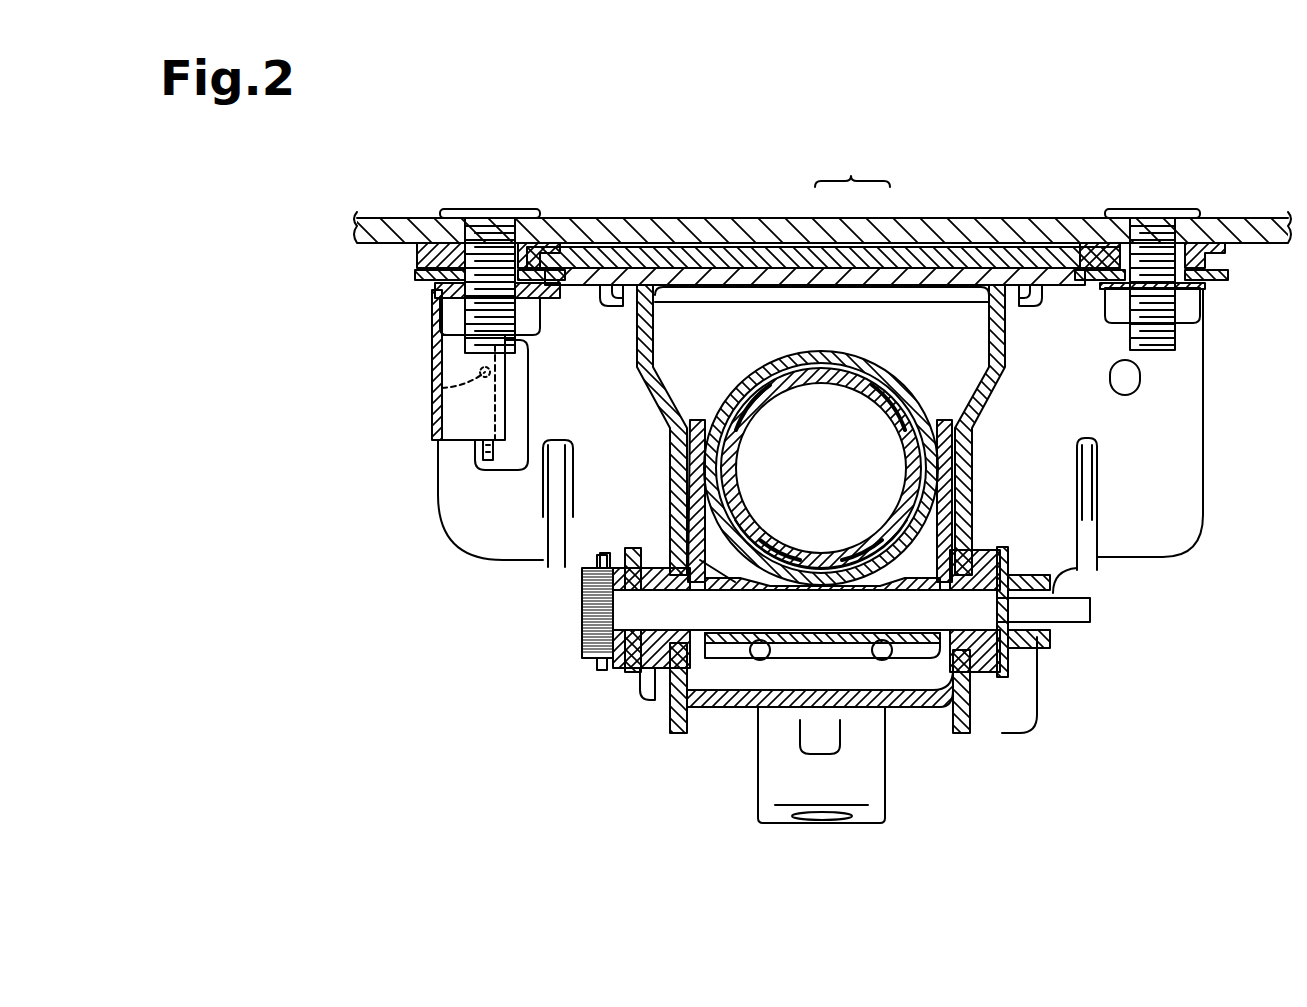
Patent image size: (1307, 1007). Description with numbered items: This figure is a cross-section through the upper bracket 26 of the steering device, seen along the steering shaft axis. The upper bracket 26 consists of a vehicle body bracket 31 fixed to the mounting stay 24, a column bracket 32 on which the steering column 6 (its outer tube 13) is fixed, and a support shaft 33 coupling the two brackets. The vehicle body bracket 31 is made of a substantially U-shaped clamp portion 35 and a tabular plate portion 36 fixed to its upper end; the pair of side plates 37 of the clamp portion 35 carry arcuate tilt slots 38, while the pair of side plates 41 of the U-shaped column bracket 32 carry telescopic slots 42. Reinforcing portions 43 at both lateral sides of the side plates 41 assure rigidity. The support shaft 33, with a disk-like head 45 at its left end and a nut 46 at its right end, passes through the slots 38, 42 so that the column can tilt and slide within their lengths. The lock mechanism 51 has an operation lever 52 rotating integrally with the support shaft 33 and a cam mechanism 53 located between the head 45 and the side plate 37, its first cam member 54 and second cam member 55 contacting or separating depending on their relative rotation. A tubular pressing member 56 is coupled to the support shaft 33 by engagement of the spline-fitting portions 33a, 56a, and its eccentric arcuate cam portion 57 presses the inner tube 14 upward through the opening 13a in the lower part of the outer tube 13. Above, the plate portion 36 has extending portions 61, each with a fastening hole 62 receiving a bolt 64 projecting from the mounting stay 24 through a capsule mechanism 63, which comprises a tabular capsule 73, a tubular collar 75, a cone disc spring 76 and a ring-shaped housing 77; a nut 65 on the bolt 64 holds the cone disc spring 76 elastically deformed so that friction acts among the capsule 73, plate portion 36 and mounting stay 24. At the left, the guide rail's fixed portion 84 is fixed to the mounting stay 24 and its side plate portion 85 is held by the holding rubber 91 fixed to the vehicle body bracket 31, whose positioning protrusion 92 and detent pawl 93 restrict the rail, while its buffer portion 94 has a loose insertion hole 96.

The steering column 6 is at (821, 450).
The outer tube 13 is at (834, 356).
The opening 13a is at (844, 558).
The inner tube 14 is at (800, 366).
The mounting stay 24 is at (1270, 222).
The upper bracket 26 is at (995, 240).
The vehicle body bracket 31 is at (872, 178).
The column bracket 32 is at (726, 702).
The support shaft 33 is at (596, 560).
The spline-fitting portion 33a is at (858, 645).
The clamp portion 35 is at (800, 275).
The plate portion 36 is at (875, 255).
The side plates 37 is at (678, 458).
The tilt slots 38 is at (665, 545).
The side plates 41 is at (708, 425).
The telescopic slots 42 is at (690, 598).
The reinforcing portions 43 is at (1203, 420).
The head 45 is at (590, 660).
The nut 46 is at (1022, 655).
The lock mechanism 51 is at (734, 643).
The operation lever 52 is at (605, 528).
The cam mechanism 53 is at (637, 689).
The first cam member 54 is at (610, 660).
The second cam member 55 is at (655, 655).
The pressing member 56 is at (800, 645).
The spline-fitting portion 56a is at (825, 600).
The cam portion 57 is at (823, 560).
The extending portions 61 is at (585, 265).
The fastening hole 62 is at (530, 250).
The capsule mechanism 63 is at (788, 266).
The bolt 64 is at (490, 212).
The nut 65 is at (540, 315).
The capsule 73 is at (1205, 250).
The collar 75 is at (1100, 278).
The cone disc spring 76 is at (1204, 282).
The housing 77 is at (1228, 272).
The fixed portion 84 is at (430, 293).
The side plate portion 85 is at (455, 430).
The holding rubber 91 is at (493, 399).
The positioning protrusion 92 is at (432, 388).
The detent pawl 93 is at (490, 460).
The buffer portion 94 is at (520, 425).
The loose insertion hole 96 is at (500, 400).